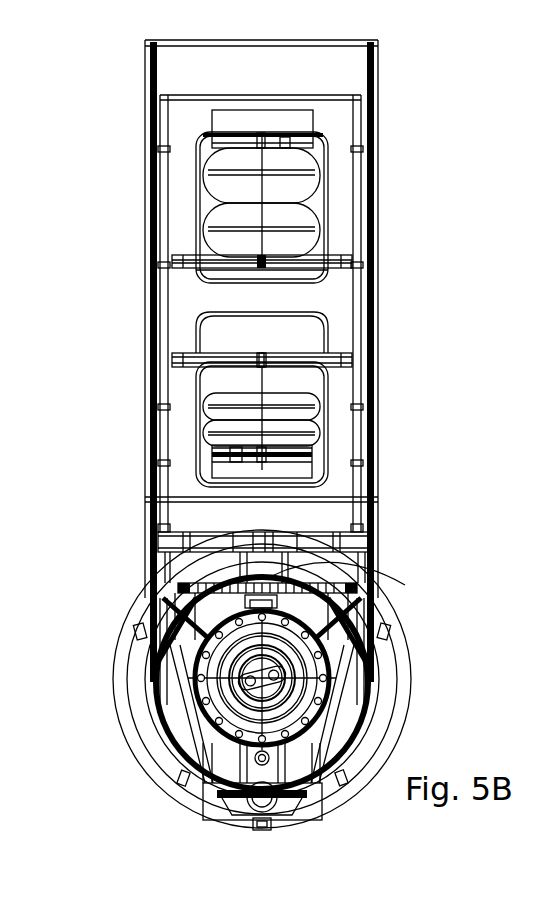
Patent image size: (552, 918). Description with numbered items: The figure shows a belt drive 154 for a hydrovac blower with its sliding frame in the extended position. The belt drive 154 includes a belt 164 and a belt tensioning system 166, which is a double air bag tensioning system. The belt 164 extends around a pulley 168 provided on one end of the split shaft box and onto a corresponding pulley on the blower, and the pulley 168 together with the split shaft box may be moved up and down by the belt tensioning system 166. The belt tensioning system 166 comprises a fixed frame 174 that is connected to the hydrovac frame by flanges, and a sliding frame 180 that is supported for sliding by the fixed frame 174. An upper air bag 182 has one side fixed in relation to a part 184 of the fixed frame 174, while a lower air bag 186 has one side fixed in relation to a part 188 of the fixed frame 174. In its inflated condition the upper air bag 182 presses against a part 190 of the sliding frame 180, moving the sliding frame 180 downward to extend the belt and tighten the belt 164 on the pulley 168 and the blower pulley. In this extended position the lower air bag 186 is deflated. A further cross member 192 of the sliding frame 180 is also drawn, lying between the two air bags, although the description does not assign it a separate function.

The belt drive 154 is at (418, 73).
The belt tensioning system 166 is at (391, 290).
The fixed frame 174 is at (352, 85).
The sliding frame 180 is at (332, 122).
The part of the fixed frame 184 is at (204, 148).
The upper air bag 182 is at (203, 230).
The part of the sliding frame 190 is at (180, 266).
The lower cross bar 192 is at (185, 355).
The lower air bag 186 is at (203, 410).
The part of the fixed frame 188 is at (212, 448).
The belt 164 is at (373, 527).
The pulley 168 is at (375, 566).